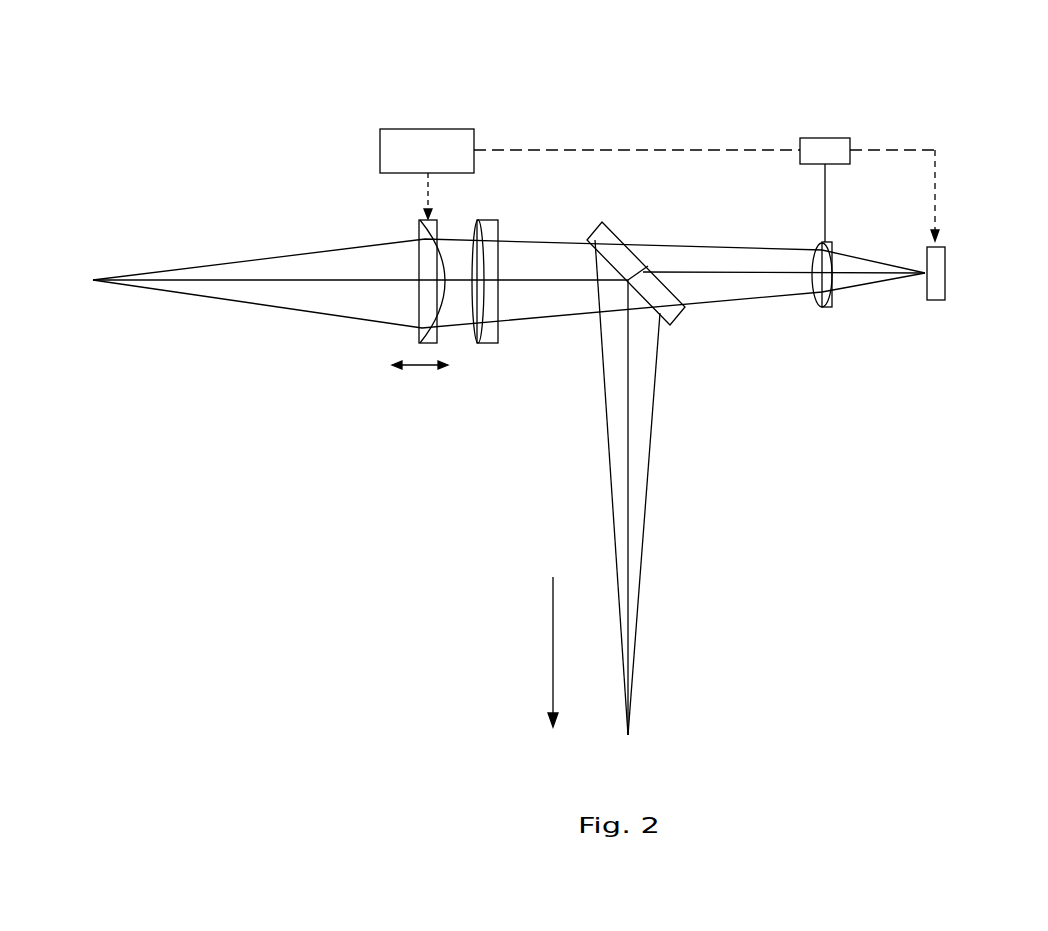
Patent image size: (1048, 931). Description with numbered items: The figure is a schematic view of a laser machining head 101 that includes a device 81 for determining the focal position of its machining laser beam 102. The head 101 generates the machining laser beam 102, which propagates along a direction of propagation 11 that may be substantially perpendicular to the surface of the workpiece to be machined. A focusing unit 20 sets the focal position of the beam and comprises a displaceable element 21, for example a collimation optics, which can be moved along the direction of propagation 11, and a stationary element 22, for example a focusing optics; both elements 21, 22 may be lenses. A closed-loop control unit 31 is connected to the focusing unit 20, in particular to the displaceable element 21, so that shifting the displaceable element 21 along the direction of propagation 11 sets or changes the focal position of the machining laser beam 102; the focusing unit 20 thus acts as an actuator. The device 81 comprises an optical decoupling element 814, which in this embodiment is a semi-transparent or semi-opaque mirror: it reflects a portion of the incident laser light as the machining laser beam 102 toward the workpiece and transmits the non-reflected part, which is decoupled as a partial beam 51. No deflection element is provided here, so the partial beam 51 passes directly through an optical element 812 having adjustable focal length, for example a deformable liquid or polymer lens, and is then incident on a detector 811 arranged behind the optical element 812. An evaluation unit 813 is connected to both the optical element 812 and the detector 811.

The laser machining head 101 is at (252, 345).
The machining laser beam 102 is at (605, 433).
The direction of propagation 11 is at (540, 652).
The focusing unit 20 is at (433, 342).
The displaceable element 21 is at (418, 333).
The stationary element 22 is at (489, 309).
The closed-loop control unit 31 is at (428, 129).
The partial beam 51 is at (749, 300).
The device for determining a focal position 81 is at (895, 259).
The detector 811 is at (945, 273).
The optical element having adjustable focal length 812 is at (826, 307).
The evaluation unit 813 is at (822, 138).
The optical decoupling element 814 is at (620, 240).